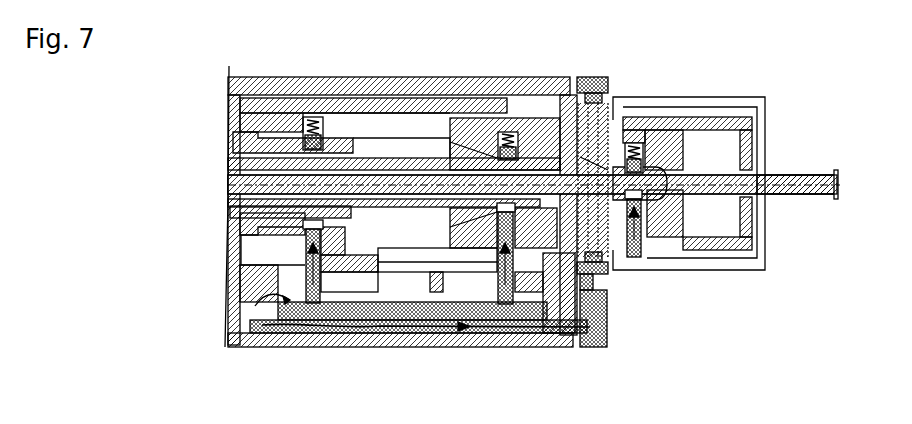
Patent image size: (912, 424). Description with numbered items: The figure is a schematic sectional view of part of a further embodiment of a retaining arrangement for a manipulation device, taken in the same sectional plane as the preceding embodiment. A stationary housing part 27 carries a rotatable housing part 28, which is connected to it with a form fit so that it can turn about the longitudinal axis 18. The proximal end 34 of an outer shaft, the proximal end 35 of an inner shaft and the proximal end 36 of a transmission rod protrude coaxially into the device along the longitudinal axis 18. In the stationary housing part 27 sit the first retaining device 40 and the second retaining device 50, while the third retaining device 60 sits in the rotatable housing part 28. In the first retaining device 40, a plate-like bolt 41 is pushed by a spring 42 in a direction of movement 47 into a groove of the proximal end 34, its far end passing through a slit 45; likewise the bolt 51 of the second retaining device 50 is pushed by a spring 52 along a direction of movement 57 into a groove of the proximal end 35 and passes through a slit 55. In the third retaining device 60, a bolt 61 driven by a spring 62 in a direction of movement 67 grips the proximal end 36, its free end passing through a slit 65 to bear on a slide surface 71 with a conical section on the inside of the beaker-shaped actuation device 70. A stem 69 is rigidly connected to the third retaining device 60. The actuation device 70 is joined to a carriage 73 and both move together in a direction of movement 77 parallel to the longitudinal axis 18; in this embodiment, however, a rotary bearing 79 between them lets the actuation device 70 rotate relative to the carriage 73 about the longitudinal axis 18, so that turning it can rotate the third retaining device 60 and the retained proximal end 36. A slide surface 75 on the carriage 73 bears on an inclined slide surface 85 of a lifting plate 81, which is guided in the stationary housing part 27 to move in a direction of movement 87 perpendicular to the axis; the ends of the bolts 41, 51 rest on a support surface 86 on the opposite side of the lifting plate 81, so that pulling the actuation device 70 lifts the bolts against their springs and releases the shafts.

The longitudinal axis 18 is at (818, 172).
The stationary housing part 27 is at (416, 78).
The rotatable housing part 28 is at (750, 232).
The proximal end of outer shaft 34 is at (252, 133).
The proximal end of inner shaft 35 is at (467, 160).
The proximal end of transmission rod 36 is at (617, 175).
The first retaining device 40 is at (303, 112).
The bolt 41 is at (324, 142).
The spring 42 is at (318, 120).
The slit 45 is at (352, 272).
The direction of movement 47 is at (312, 265).
The second retaining device 50 is at (492, 118).
The bolt 51 is at (516, 150).
The spring 52 is at (512, 135).
The slit 55 is at (450, 272).
The direction of movement 57 is at (513, 268).
The third retaining device 60 is at (636, 140).
The bolt 61 is at (644, 168).
The spring 62 is at (640, 150).
The slit 65 is at (660, 248).
The direction of movement 67 is at (746, 262).
The stem 69 is at (782, 172).
The actuation device 70 is at (758, 270).
The slide surface 71 is at (640, 256).
The carriage 73 is at (525, 330).
The slide surface 75 is at (498, 306).
The direction of movement 77 is at (450, 328).
The rotary bearing 79 is at (630, 262).
The lifting plate 81 is at (333, 322).
The slide surface 85 is at (520, 292).
The support surface 86 is at (250, 302).
The direction of movement 87 is at (381, 305).